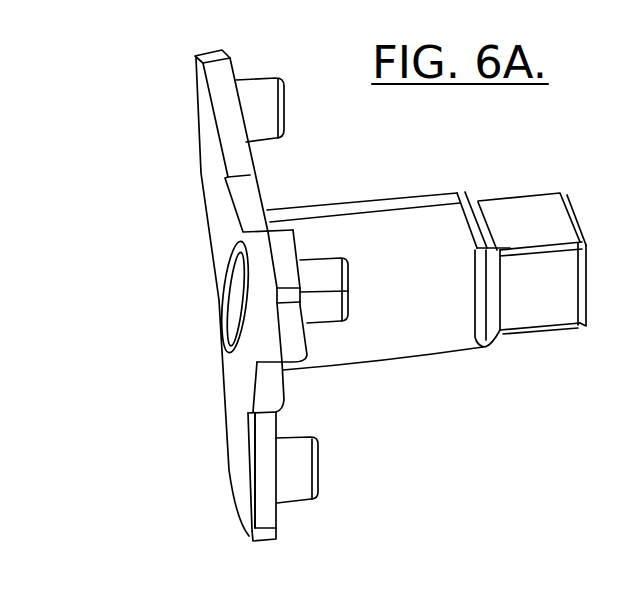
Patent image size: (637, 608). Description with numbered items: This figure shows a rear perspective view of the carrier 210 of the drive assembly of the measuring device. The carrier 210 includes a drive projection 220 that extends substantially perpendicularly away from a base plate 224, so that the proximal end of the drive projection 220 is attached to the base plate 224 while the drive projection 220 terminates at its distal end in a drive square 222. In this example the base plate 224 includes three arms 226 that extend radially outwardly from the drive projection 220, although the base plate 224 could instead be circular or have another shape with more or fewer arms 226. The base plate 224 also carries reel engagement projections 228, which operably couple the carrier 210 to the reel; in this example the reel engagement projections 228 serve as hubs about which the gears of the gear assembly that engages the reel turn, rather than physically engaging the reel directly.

The carrier 210 is at (196, 181).
The drive projection 220 is at (380, 223).
The drive square 222 is at (533, 227).
The base plate 224 is at (248, 387).
The arms 226 is at (193, 108).
The reel engagement projections 228 is at (258, 125).